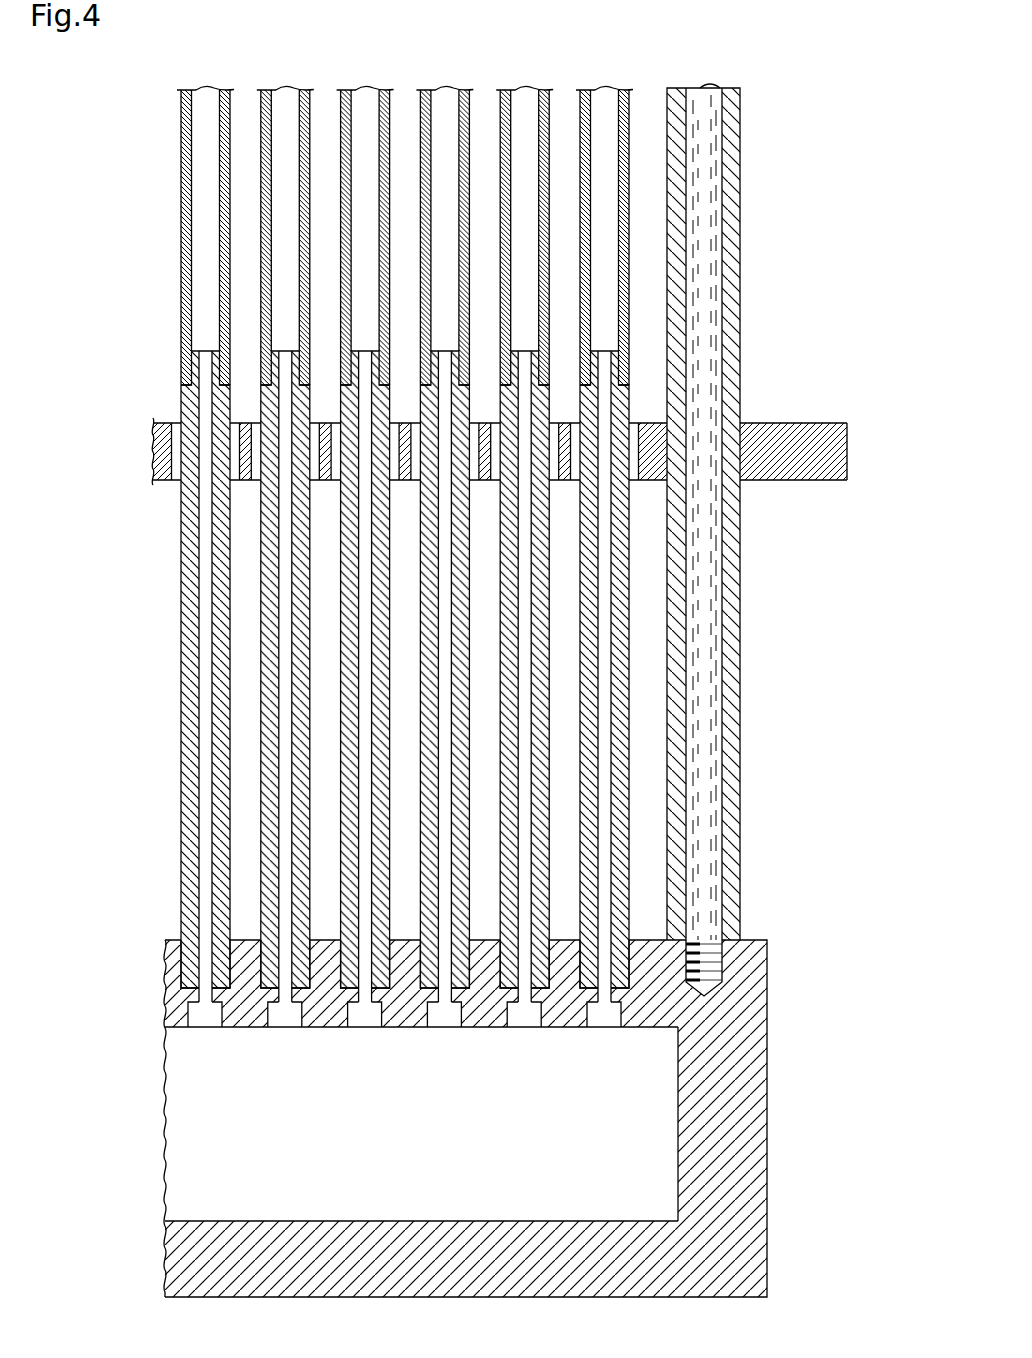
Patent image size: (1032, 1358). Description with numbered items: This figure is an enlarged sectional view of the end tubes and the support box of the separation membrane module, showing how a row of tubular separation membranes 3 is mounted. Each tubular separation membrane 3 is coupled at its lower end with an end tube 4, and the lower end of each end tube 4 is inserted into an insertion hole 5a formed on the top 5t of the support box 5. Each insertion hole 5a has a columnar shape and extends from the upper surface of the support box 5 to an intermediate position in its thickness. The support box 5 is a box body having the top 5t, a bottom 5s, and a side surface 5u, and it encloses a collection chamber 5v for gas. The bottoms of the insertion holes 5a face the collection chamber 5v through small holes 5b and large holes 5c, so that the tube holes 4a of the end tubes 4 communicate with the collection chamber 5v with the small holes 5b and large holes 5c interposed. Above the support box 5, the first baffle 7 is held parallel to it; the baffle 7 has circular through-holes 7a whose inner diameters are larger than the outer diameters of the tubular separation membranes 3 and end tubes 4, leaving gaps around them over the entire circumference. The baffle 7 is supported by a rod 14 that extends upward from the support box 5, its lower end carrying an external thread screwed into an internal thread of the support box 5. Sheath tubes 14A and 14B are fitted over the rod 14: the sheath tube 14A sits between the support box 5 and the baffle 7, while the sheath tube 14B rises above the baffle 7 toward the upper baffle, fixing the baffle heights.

The tubular separation membrane 3 is at (181, 128).
The end tube 4 is at (386, 669).
The tube hole 4a is at (205, 752).
The support box 5 is at (457, 1118).
The insertion hole 5a is at (180, 962).
The small hole 5b is at (205, 997).
The large hole 5c is at (217, 1013).
The bottom 5s is at (195, 1221).
The top 5t is at (172, 1030).
The side surface 5u is at (676, 1122).
The collection chamber 5v is at (385, 1124).
The first baffle 7 is at (527, 460).
The through-hole 7a is at (396, 423).
The rod 14 is at (748, 510).
The sheath tube 14A is at (740, 741).
The sheath tube 14B is at (740, 163).